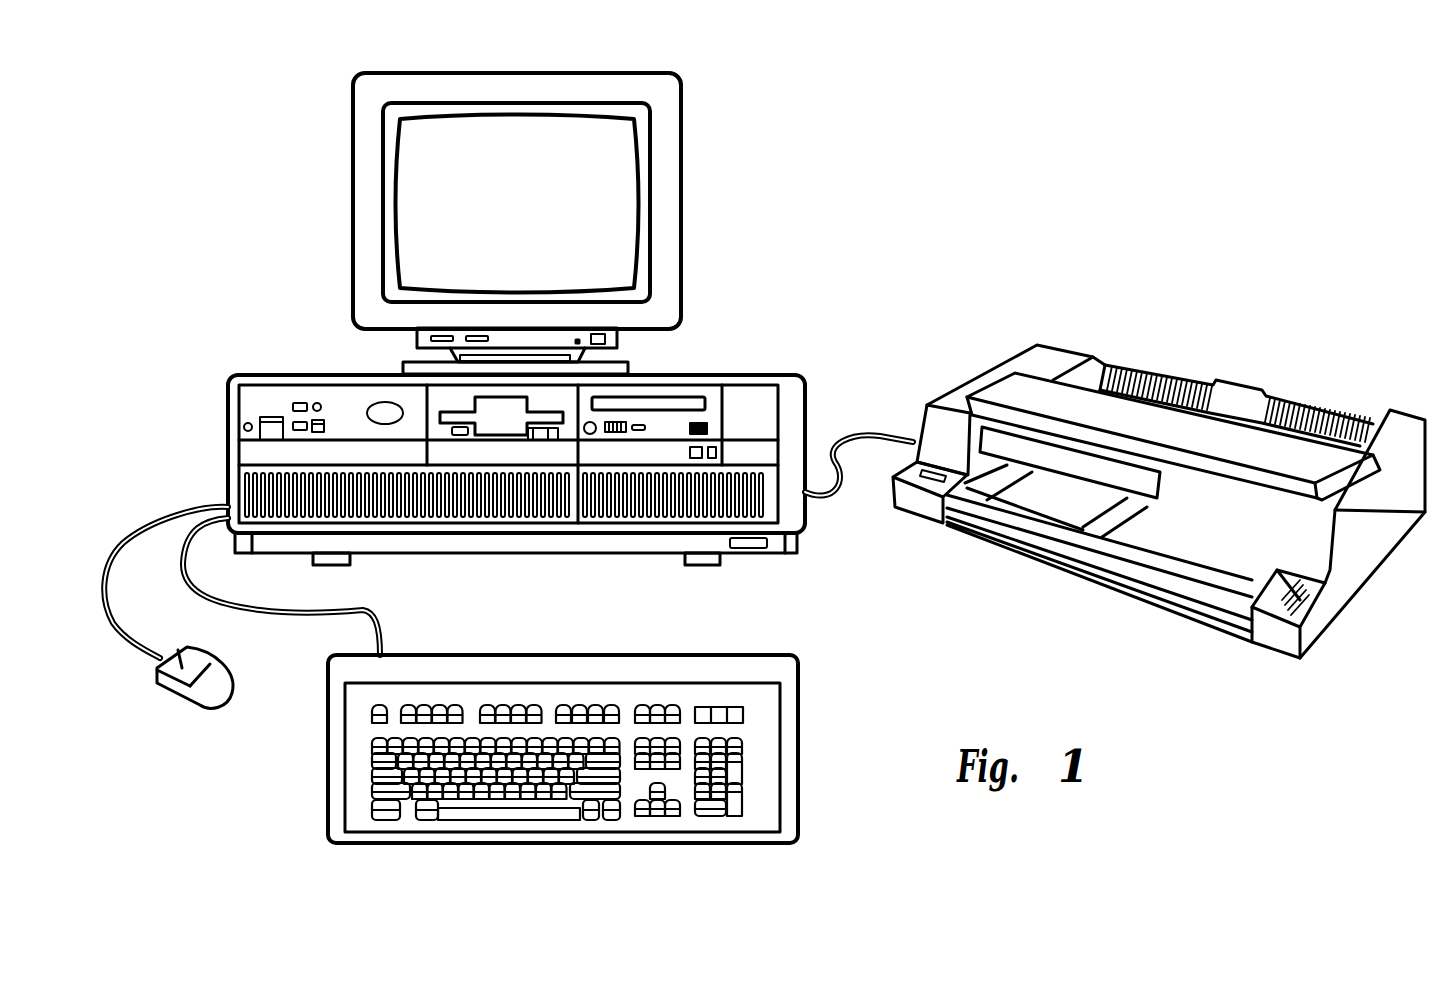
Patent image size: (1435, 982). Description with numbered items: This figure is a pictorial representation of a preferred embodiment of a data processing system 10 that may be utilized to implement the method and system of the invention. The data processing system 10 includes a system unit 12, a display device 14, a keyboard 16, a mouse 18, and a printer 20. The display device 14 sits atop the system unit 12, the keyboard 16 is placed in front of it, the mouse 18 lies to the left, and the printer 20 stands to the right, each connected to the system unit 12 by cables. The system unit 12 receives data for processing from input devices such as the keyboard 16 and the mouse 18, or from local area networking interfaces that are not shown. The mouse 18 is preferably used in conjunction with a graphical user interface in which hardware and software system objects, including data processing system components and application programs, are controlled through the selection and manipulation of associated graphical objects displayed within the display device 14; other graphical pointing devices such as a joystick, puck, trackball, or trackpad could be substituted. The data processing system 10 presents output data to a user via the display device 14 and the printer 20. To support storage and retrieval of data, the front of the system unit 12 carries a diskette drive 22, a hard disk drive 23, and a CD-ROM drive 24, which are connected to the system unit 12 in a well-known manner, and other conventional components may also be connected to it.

The data processing system 10 is at (880, 120).
The system unit 12 is at (521, 457).
The display device 14 is at (700, 217).
The keyboard 16 is at (640, 650).
The mouse 18 is at (190, 692).
The printer 20 is at (950, 370).
The diskette drive 22 is at (500, 432).
The hard disk drive 23 is at (653, 455).
The CD-ROM drive 24 is at (670, 403).